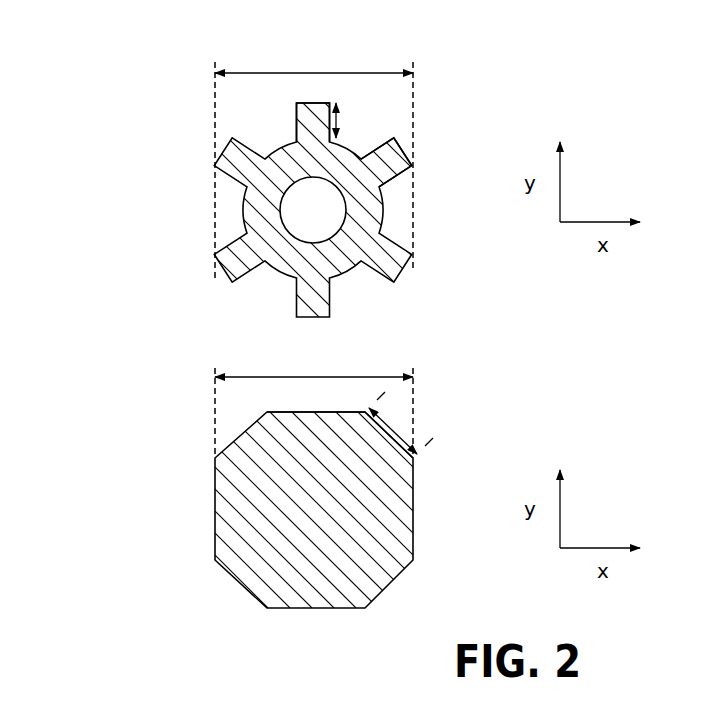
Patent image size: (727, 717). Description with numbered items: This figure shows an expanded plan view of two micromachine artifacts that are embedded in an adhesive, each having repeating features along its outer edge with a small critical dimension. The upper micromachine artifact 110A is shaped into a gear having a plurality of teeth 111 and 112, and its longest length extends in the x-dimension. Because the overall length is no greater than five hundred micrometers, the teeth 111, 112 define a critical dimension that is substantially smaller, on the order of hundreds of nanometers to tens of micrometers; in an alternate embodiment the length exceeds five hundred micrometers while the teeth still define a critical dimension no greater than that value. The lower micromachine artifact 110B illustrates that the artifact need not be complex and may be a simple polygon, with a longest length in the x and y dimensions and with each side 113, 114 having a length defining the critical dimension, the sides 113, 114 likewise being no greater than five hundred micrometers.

The micromachine artifact 110A is at (160, 133).
The tooth 111 is at (297, 113).
The tooth 112 is at (412, 187).
The micromachine artifact 110B is at (151, 427).
The side 113 is at (287, 411).
The side 114 is at (393, 443).